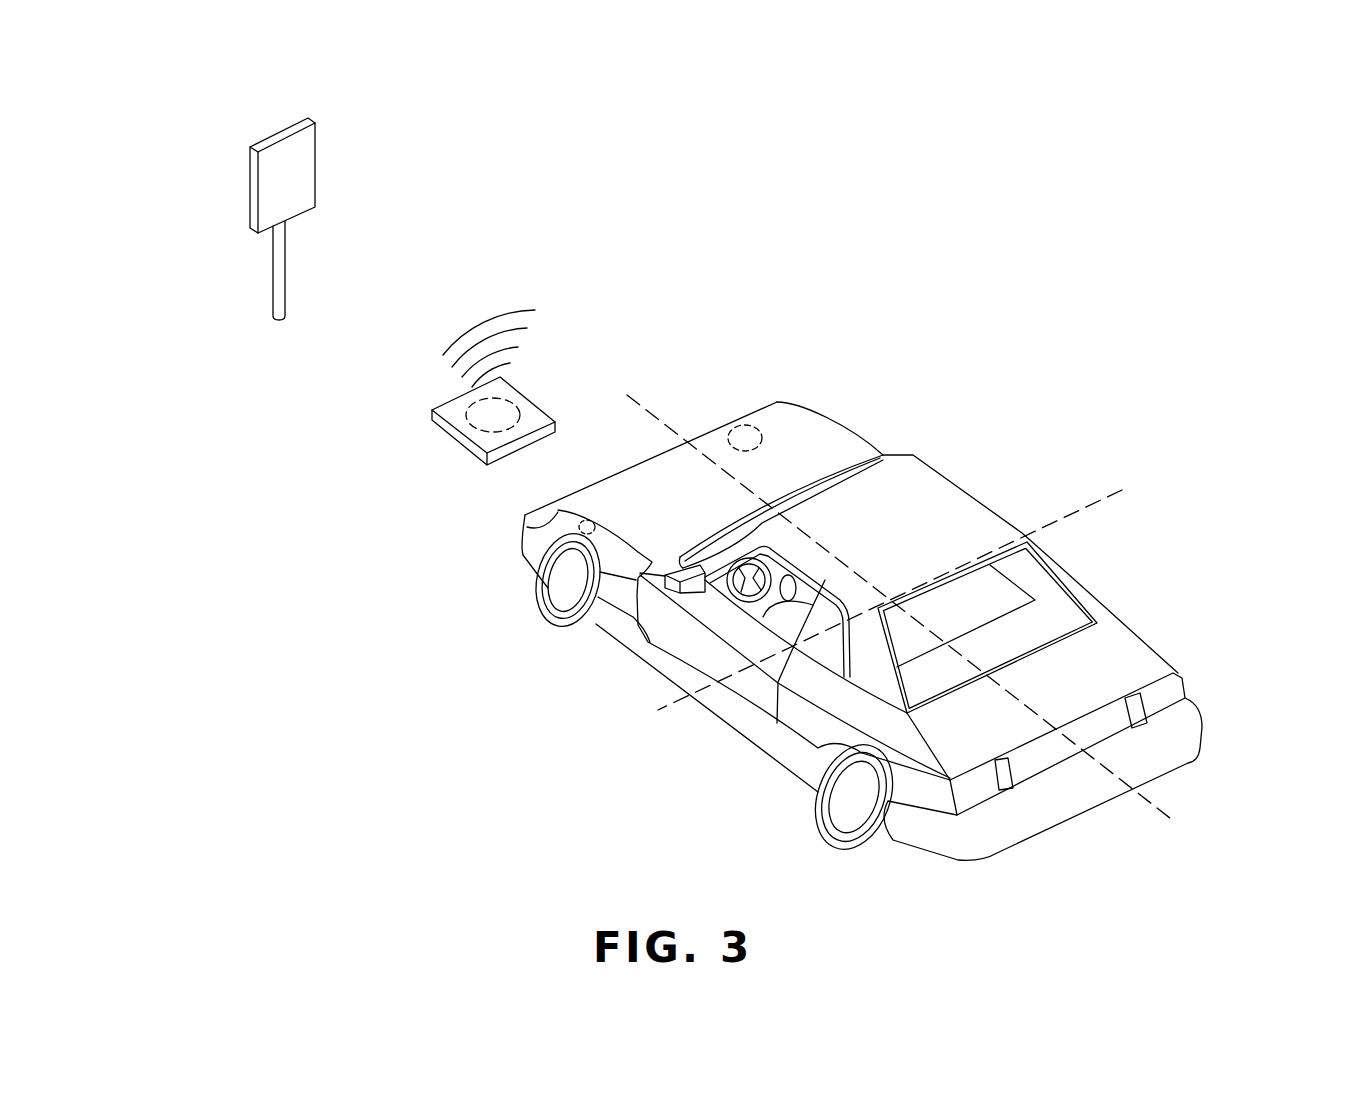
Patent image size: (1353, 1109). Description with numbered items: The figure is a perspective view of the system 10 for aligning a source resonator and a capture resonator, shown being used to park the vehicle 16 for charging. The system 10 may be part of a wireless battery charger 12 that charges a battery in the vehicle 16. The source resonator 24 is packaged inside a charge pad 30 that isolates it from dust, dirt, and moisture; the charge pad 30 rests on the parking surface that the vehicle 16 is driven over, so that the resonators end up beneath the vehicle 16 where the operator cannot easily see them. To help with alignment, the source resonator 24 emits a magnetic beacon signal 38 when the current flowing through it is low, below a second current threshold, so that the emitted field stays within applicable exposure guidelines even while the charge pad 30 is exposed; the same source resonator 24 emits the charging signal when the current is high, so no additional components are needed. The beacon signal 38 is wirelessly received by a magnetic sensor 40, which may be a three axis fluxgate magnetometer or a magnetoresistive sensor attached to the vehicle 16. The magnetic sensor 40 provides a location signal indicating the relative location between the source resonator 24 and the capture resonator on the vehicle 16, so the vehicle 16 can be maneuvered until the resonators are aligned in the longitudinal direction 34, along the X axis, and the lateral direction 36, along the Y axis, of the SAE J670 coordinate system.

The system 10 is at (755, 228).
The wireless battery charger 12 is at (252, 185).
The vehicle 16 is at (932, 480).
The source resonator 24 is at (517, 410).
The charge pad 30 is at (443, 427).
The longitudinal direction 34 is at (1123, 488).
The lateral direction 36 is at (1150, 802).
The magnetic beacon signal 38 is at (488, 320).
The magnetic sensor 40 is at (738, 424).